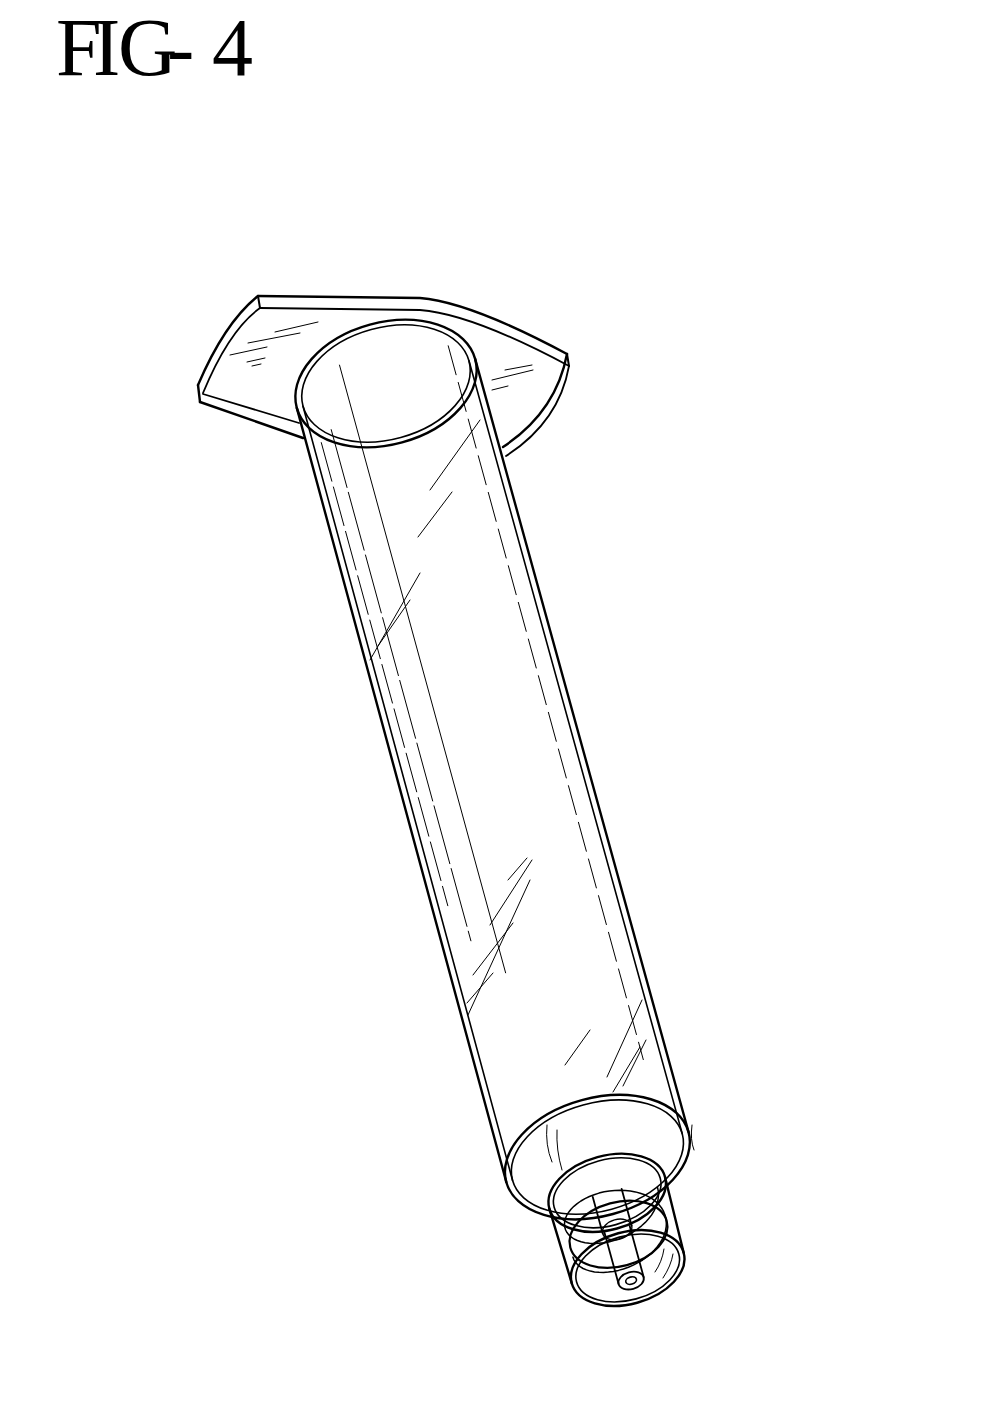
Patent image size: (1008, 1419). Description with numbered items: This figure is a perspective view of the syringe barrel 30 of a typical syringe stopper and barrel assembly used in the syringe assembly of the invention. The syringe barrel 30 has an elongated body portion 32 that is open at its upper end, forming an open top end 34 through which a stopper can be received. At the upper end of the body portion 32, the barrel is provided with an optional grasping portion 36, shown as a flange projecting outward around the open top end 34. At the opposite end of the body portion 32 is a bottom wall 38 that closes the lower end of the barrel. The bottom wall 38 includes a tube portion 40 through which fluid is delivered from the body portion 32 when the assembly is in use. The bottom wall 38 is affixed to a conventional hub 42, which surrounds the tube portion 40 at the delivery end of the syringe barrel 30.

The syringe barrel 30 is at (778, 532).
The body portion 32 is at (560, 667).
The open top end 34 is at (378, 392).
The grasping portion 36 is at (521, 391).
The bottom wall 38 is at (680, 1160).
The tube portion 40 is at (588, 1218).
The hub 42 is at (684, 1249).